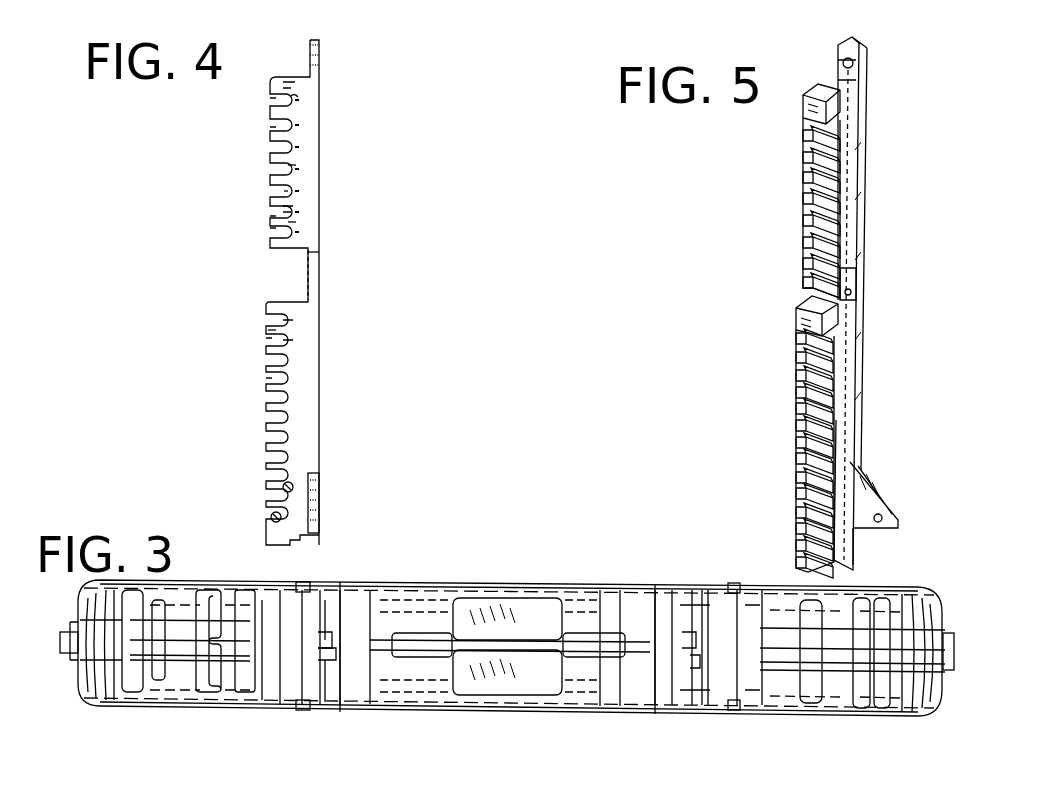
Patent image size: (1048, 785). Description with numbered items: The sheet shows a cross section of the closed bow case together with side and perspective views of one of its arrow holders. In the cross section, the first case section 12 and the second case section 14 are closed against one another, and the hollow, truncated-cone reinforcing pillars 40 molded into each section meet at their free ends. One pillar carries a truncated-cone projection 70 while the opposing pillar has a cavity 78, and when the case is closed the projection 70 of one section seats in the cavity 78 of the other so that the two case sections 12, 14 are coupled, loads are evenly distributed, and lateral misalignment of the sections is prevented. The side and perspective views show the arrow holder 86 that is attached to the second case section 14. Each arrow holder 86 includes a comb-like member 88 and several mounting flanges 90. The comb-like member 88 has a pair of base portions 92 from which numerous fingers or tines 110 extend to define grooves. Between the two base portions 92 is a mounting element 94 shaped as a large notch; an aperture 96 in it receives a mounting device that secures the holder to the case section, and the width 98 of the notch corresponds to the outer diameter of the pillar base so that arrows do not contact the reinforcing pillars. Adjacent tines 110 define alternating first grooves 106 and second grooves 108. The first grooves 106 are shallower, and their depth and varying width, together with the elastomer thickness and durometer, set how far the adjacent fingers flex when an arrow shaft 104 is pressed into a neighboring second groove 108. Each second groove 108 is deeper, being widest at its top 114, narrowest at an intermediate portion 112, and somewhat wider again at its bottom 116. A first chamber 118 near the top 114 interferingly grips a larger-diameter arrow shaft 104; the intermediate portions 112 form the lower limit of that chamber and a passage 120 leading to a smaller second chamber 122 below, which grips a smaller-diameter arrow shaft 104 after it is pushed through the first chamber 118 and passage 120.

In FIG. 3, the first case section 12 is at (940, 705).
In FIG. 3, the second case section 14 is at (940, 610).
In FIG. 3, the reinforcing pillar 40 is at (336, 659).
In FIG. 3, the projection 70 is at (330, 650).
In FIG. 3, the cavity 78 is at (330, 650).
In FIG. 4, the arrow holder 86 is at (300, 278).
In FIG. 5, the arrow holder 86 is at (832, 307).
In FIG. 4, the comb-like member 88 is at (256, 153).
In FIG. 5, the comb-like member 88 is at (800, 203).
In FIG. 4, the mounting flange 90 is at (314, 52).
In FIG. 5, the mounting flange 90 is at (860, 80).
In FIG. 4, the base portion 92 is at (303, 153).
In FIG. 5, the base portion 92 is at (863, 187).
In FIG. 4, the mounting element 94 is at (318, 252).
In FIG. 5, the aperture 96 is at (858, 278).
In FIG. 4, the width of the notch 98 is at (319, 252).
In FIG. 4, the arrow shaft 104 is at (271, 517).
In FIG. 4, the first groove 106 is at (268, 378).
In FIG. 4, the second groove 108 is at (270, 128).
In FIG. 4, the finger or tine 110 is at (276, 330).
In FIG. 4, the intermediate portion 112 is at (293, 340).
In FIG. 4, the top of the second groove 114 is at (276, 230).
In FIG. 4, the bottom of the second groove 116 is at (300, 224).
In FIG. 4, the first chamber 118 is at (284, 192).
In FIG. 4, the passage 120 is at (300, 165).
In FIG. 4, the second chamber 122 is at (293, 101).